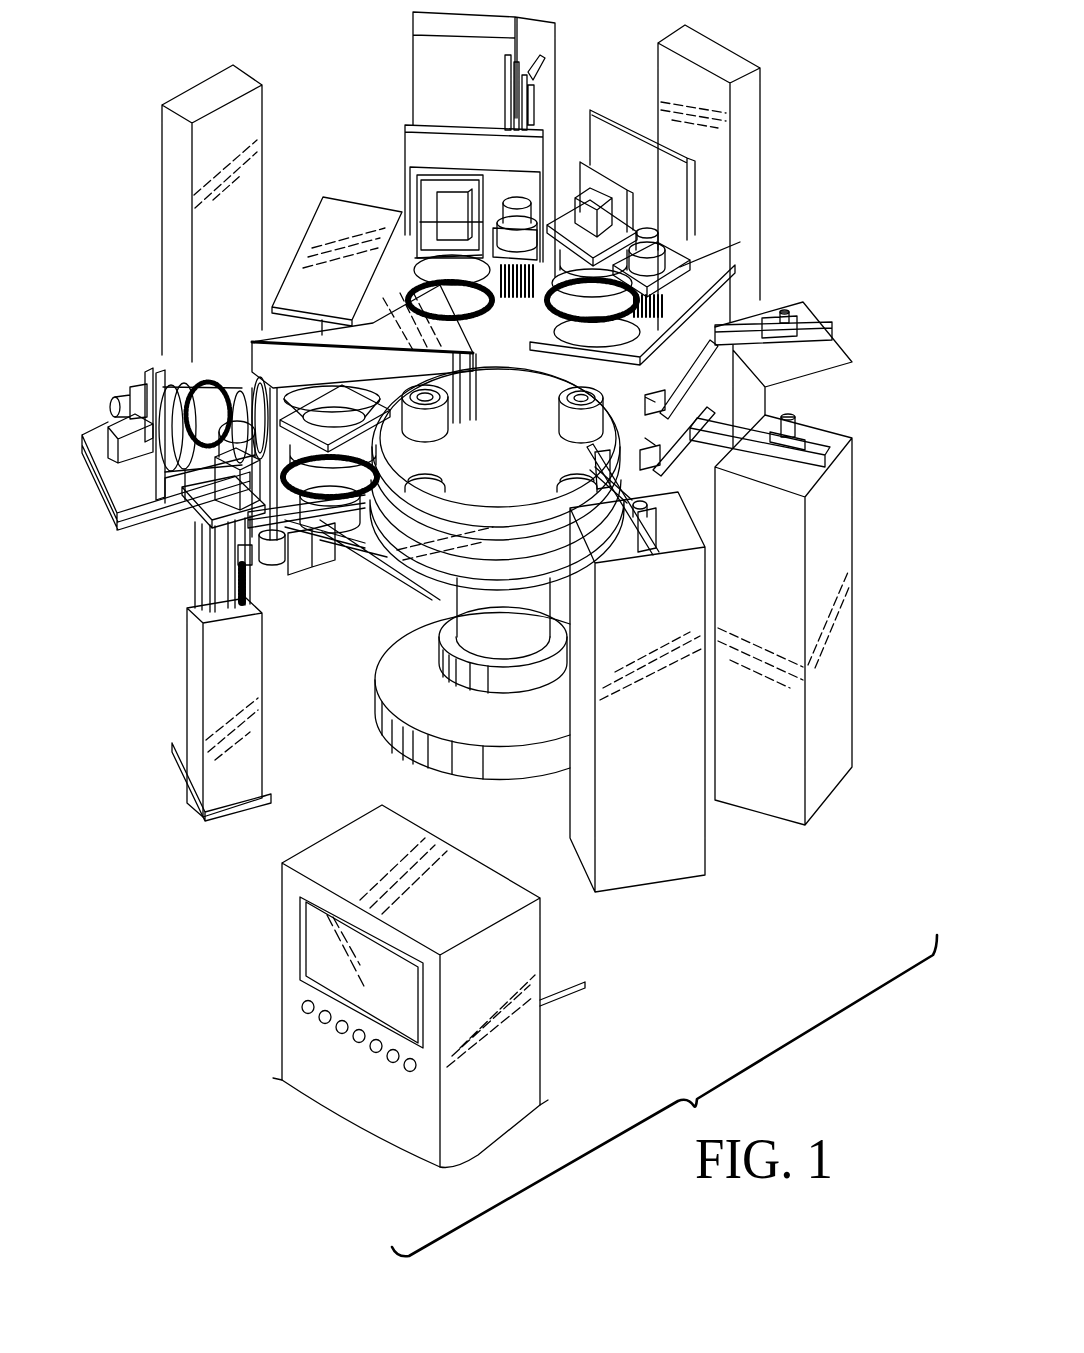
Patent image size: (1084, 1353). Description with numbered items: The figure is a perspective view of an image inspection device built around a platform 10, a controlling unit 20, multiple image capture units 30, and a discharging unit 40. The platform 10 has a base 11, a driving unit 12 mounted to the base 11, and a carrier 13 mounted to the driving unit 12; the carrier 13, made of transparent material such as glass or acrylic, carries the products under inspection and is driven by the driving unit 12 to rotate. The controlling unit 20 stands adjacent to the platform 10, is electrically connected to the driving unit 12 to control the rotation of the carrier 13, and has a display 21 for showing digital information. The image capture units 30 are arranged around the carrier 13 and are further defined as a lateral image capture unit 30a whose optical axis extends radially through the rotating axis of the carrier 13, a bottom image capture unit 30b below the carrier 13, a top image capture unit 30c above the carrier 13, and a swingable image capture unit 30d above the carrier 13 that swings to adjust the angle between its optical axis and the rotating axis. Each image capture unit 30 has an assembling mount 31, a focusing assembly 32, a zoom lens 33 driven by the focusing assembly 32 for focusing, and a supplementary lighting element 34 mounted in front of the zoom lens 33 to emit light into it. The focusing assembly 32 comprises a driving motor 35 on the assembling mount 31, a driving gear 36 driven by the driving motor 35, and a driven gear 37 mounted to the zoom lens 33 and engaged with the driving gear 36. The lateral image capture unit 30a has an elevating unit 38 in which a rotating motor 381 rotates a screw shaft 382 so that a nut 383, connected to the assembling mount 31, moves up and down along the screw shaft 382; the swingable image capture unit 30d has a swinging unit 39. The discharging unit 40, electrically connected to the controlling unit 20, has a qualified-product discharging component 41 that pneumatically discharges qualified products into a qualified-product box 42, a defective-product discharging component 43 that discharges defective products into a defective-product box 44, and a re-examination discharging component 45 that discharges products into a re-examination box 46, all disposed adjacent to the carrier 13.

The platform 10 is at (375, 745).
The base 11 is at (469, 725).
The driving unit 12 is at (500, 645).
The carrier 13 is at (463, 570).
The controlling unit 20 is at (523, 957).
The display 21 is at (325, 942).
The image capture unit 30 is at (100, 417).
The lateral image capture unit 30a is at (150, 547).
The bottom image capture unit 30b is at (345, 548).
The top image capture unit 30c is at (700, 265).
The swingable image capture unit 30d is at (422, 152).
The assembling mount 31 is at (140, 507).
The focusing assembly 32 is at (115, 380).
The zoom lens 33 is at (252, 342).
The supplementary lighting element 34 is at (457, 418).
The driving motor 35 is at (162, 370).
The driving gear 36 is at (200, 382).
The driven gear 37 is at (224, 376).
The elevating unit 38 is at (266, 602).
The rotating motor 381 is at (238, 450).
The screw shaft 382 is at (240, 575).
The nut 383 is at (246, 556).
The swinging unit 39 is at (540, 70).
The discharging unit 40 is at (902, 323).
The qualified-product discharging component 41 is at (830, 352).
The qualified-product box 42 is at (832, 400).
The defective-product discharging component 43 is at (680, 355).
The defective-product box 44 is at (823, 442).
The re-examination discharging component 45 is at (603, 520).
The re-examination box 46 is at (685, 575).